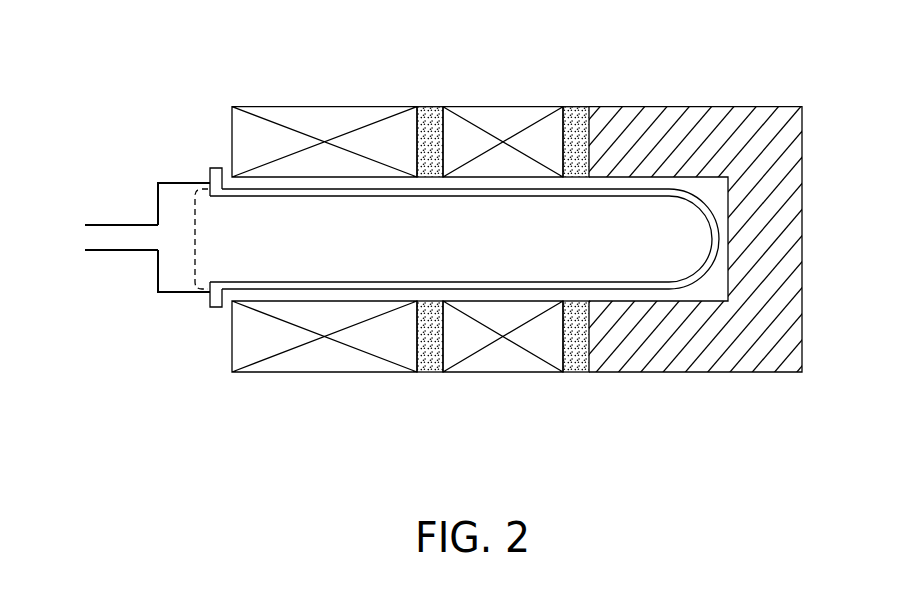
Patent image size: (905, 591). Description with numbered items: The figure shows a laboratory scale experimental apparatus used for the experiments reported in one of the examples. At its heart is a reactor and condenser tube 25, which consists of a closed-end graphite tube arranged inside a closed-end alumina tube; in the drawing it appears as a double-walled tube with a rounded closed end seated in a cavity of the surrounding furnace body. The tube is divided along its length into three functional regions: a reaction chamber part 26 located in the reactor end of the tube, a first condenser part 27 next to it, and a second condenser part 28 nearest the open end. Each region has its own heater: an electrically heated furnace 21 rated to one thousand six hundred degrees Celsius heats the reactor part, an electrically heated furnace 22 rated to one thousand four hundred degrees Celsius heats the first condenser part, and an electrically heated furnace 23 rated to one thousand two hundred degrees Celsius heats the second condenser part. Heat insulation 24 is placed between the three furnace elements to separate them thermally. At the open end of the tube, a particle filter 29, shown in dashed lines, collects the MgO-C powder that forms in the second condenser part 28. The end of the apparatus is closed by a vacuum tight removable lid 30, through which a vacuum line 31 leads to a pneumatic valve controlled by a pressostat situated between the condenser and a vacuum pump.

The electrically heated furnace 21 is at (712, 358).
The electrically heated furnace 22 is at (503, 116).
The electrically heated furnace 23 is at (320, 117).
The heat insulation 24 is at (430, 116).
The reactor and condenser tube 25 is at (570, 199).
The reaction chamber part 26 is at (687, 250).
The first condenser part 27 is at (510, 250).
The second condenser part 28 is at (327, 250).
The particle filter 29 is at (192, 207).
The vacuum tight removable lid 30 is at (157, 273).
The vacuum line 31 is at (100, 239).